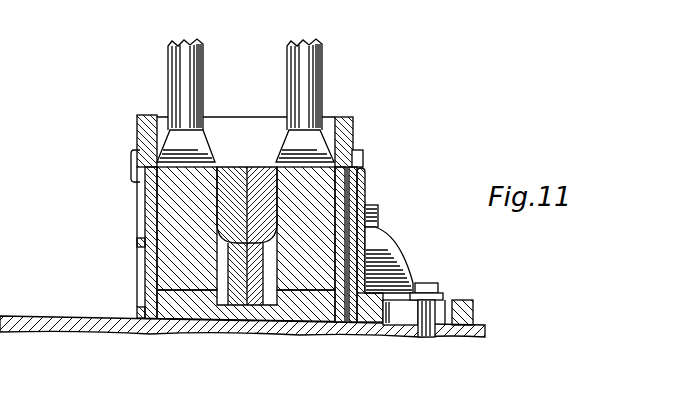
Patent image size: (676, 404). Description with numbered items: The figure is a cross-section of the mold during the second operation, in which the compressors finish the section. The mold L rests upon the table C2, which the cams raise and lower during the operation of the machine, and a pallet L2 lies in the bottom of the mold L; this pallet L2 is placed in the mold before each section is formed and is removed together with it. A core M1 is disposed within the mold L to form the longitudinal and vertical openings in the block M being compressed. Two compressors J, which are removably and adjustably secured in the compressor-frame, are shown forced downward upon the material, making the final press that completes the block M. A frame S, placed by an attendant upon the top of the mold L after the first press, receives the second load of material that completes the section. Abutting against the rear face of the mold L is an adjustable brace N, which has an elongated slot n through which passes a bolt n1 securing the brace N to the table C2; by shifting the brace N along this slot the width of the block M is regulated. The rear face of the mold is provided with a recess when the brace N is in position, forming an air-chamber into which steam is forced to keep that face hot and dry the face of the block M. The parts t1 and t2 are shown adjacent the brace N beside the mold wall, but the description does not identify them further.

The compressor J is at (170, 64).
The core M1 is at (240, 166).
The frame S is at (342, 133).
The mold L is at (140, 178).
The block M is at (166, 255).
The thin lever strip t1 is at (357, 184).
The lever piece t2 is at (363, 257).
The adjustable brace N is at (392, 262).
The elongated slot n is at (402, 313).
The bolt n1 is at (426, 330).
The pallet L2 is at (205, 310).
The table C2 is at (242, 347).